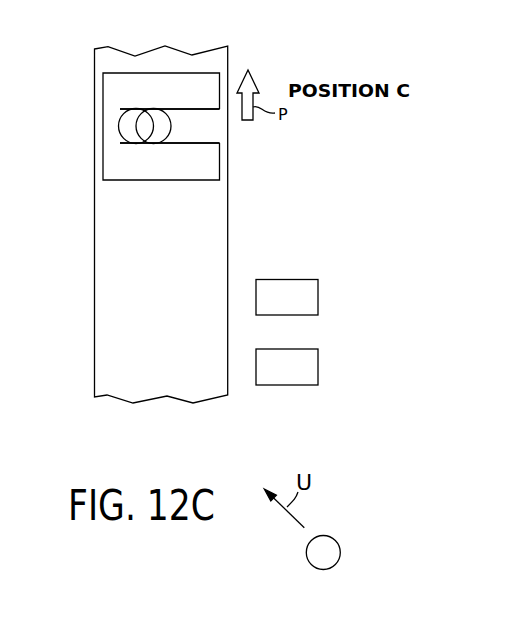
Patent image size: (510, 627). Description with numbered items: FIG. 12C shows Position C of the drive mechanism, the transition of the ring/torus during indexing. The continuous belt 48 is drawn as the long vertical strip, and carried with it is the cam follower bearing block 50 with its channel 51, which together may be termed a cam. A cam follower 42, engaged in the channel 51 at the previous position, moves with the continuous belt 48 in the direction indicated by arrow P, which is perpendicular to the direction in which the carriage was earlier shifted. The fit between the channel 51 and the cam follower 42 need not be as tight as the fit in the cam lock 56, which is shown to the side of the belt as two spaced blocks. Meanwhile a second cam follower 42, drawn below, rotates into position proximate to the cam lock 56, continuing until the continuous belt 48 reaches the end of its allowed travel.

The cam follower 42 is at (139, 125).
The continuous belt 48 is at (102, 262).
The cam follower bearing block 50 is at (185, 180).
The channel 51 is at (205, 142).
The cam lock 56 is at (293, 385).